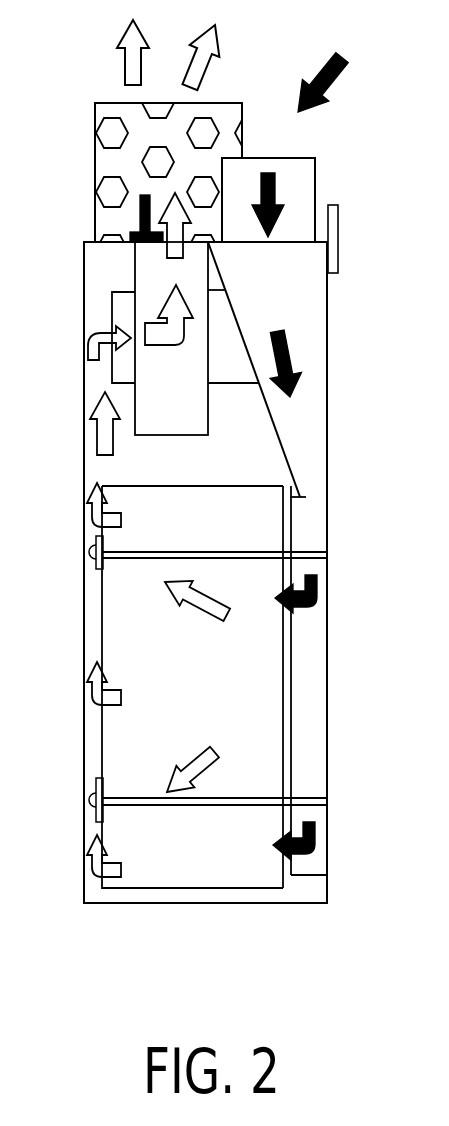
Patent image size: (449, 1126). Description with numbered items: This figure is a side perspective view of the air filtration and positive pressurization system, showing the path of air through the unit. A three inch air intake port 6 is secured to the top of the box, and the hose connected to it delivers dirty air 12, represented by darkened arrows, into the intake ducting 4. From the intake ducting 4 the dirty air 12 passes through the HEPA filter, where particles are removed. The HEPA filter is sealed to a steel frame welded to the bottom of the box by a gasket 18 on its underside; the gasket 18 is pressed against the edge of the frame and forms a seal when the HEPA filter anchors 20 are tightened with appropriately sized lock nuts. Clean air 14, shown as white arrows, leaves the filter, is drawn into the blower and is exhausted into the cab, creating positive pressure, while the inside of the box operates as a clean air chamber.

The intake ducting 4 is at (292, 418).
The air intake port 6 is at (278, 157).
The dirty air 12 is at (330, 90).
The clean air 14 is at (123, 43).
The gasket 18 is at (283, 695).
The HEPA filter anchors 20 is at (103, 818).